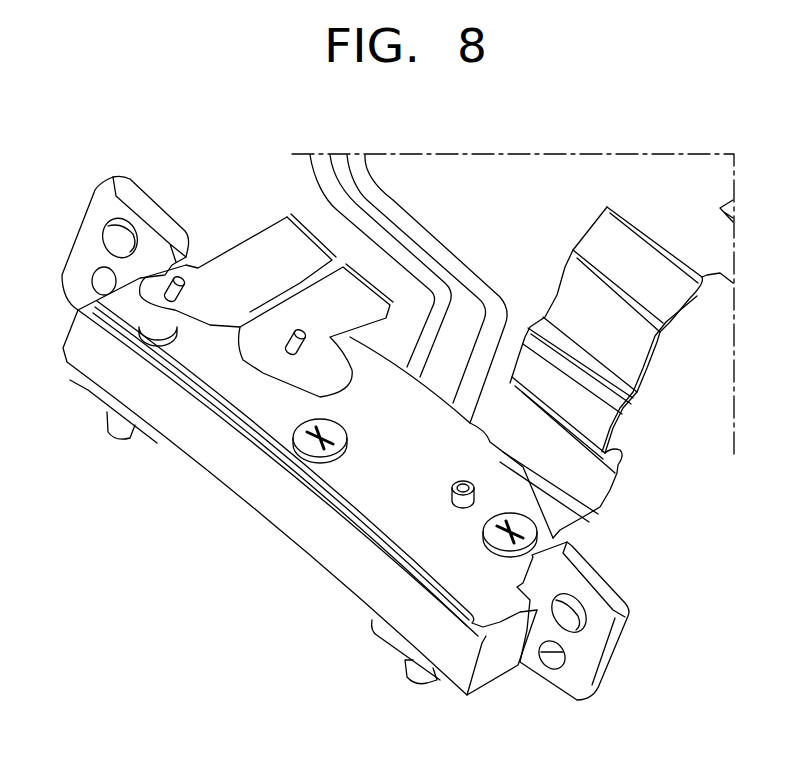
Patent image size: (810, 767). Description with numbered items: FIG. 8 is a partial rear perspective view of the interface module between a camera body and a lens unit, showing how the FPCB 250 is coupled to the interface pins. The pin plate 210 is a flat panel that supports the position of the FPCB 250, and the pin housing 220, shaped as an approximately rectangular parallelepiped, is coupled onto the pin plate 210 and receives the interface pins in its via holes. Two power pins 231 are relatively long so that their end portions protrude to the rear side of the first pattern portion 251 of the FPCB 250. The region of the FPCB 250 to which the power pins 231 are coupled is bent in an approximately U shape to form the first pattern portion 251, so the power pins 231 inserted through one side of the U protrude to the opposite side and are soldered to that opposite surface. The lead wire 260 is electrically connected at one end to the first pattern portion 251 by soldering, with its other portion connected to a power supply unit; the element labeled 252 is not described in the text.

The pin plate 210 is at (380, 503).
The pin housing 220 is at (102, 362).
The power pins 231 is at (293, 340).
The FPCB 250 is at (675, 147).
The first pattern portion 251 is at (232, 258).
The clip bracket 252 is at (603, 232).
The lead wire 260 is at (443, 247).